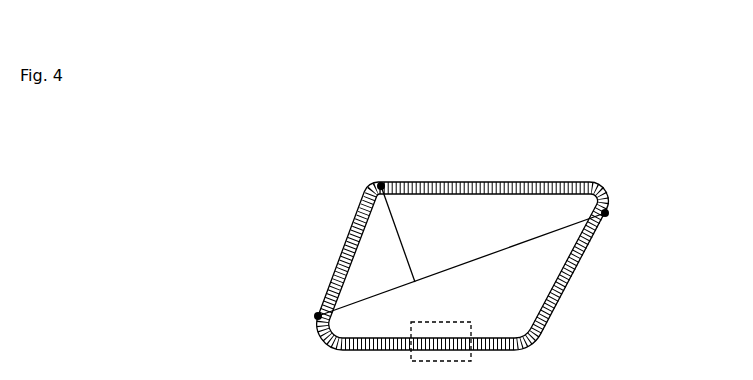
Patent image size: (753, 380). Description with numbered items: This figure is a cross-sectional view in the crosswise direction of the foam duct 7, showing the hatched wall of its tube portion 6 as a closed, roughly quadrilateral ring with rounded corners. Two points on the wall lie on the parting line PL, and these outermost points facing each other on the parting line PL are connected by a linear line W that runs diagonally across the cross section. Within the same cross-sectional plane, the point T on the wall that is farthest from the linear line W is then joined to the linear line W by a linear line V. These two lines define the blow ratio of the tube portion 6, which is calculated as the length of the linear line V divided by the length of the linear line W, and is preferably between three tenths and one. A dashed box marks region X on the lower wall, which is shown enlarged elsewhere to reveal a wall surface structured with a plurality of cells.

The tube portion 6 is at (573, 285).
The foam duct 7 is at (314, 221).
The point T is at (373, 172).
The parting line PL is at (606, 213).
The linear line W is at (461, 263).
The linear line V is at (399, 234).
The region X is at (443, 330).